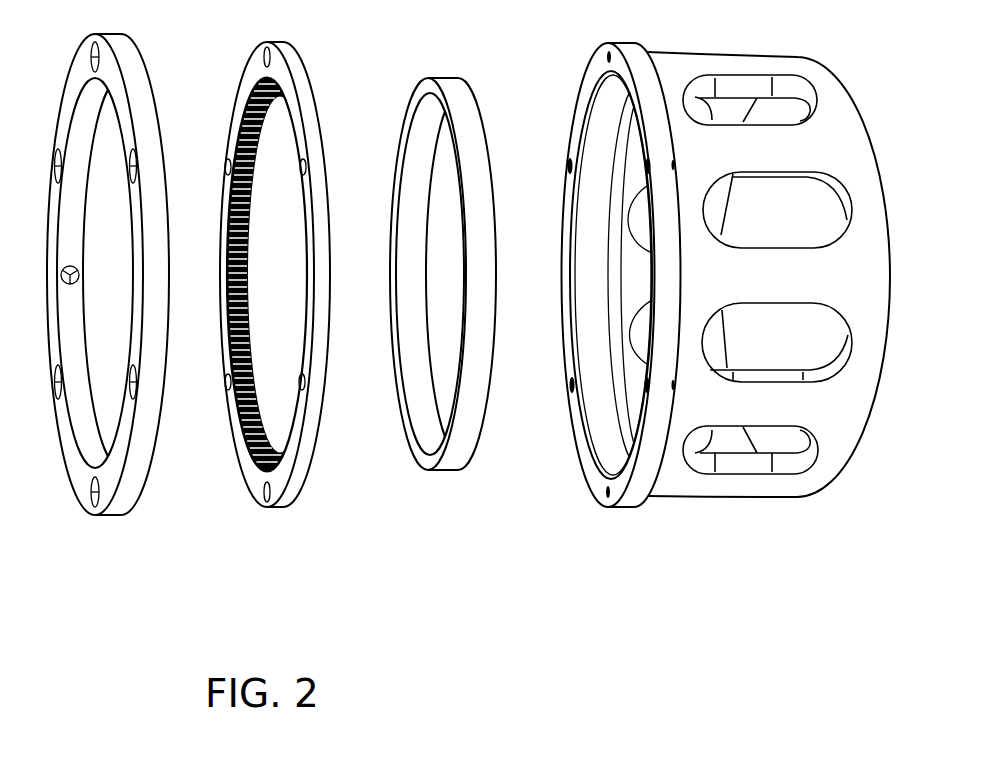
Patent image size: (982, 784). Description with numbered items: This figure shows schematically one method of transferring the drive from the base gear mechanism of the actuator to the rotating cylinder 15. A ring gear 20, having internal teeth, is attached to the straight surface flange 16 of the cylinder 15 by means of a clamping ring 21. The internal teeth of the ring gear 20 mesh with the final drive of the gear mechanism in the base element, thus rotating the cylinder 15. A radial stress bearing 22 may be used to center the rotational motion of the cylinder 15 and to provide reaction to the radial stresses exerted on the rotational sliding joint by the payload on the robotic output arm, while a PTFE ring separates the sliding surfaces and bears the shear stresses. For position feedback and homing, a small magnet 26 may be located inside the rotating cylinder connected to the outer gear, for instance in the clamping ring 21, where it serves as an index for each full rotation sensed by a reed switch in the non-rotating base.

The cylinder 15 is at (735, 498).
The straight surface flange 16 is at (627, 508).
The ring gear 20 is at (272, 508).
The clamping ring 21 is at (108, 303).
The radial stress bearing 22 is at (450, 471).
The small magnet 26 is at (72, 268).